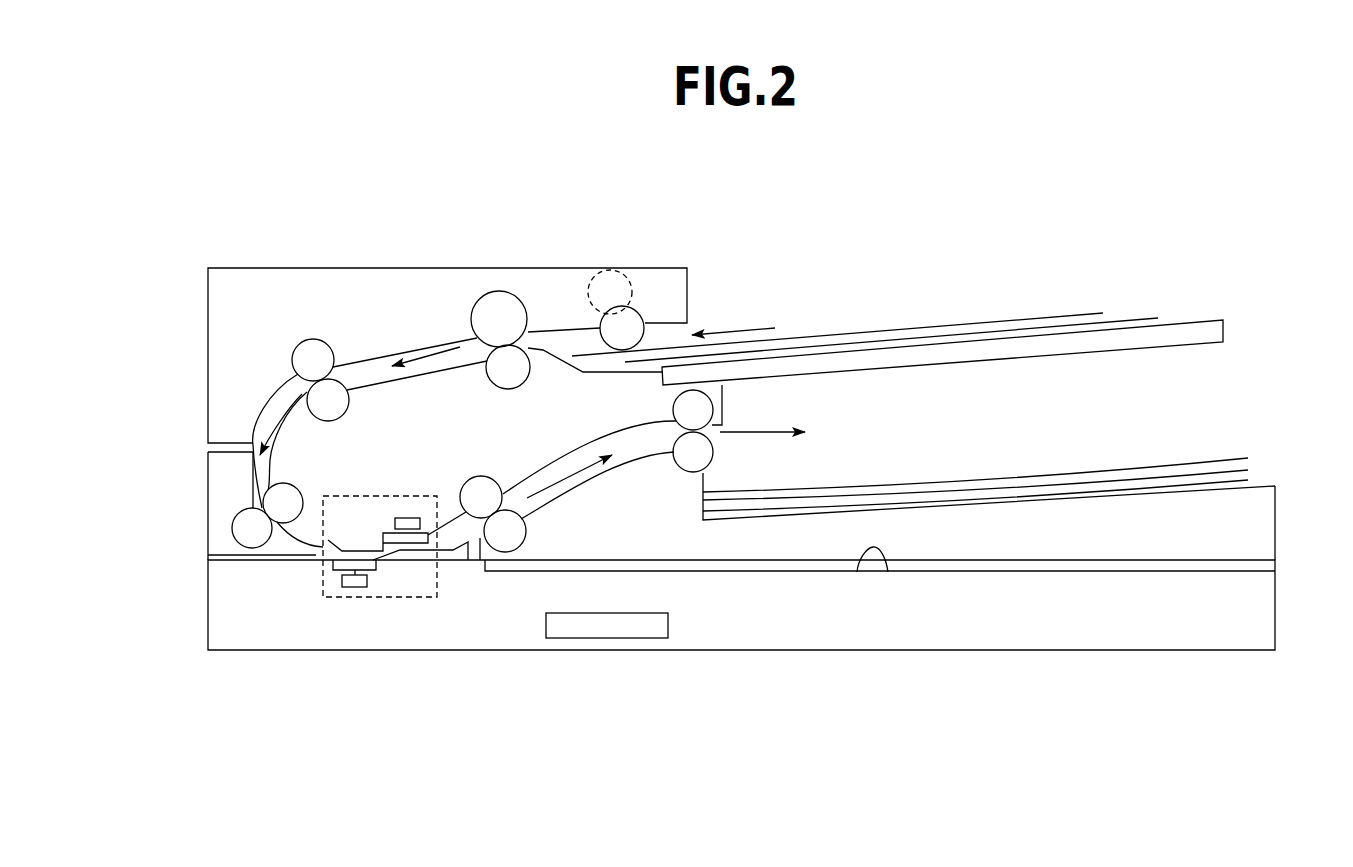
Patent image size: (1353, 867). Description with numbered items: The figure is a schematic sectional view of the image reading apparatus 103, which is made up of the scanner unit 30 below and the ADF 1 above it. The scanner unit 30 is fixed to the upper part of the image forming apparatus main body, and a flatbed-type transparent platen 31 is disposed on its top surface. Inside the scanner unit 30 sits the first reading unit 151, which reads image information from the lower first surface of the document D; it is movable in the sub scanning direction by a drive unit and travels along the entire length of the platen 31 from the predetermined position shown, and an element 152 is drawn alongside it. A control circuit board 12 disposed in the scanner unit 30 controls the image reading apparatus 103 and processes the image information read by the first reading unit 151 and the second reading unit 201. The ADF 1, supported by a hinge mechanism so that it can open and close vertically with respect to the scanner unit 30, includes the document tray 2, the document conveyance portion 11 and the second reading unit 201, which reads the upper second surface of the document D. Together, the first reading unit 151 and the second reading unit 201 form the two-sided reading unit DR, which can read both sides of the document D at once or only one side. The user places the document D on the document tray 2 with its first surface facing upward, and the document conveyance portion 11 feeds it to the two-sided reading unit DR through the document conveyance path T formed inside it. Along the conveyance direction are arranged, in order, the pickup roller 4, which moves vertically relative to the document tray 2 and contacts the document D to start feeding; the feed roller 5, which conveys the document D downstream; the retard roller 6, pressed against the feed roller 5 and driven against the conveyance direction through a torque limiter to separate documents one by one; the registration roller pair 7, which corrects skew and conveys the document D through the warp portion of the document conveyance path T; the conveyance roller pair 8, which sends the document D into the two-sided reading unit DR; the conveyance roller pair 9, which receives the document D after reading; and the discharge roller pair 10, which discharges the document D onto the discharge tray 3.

The image reading apparatus 103 is at (693, 230).
The document conveyance portion 11 is at (270, 262).
The scanner unit 30 is at (1237, 668).
The control circuit board 12 is at (604, 639).
The platen 31 is at (857, 572).
The discharge tray 3 is at (1257, 498).
The document tray 2 is at (1063, 352).
The ADF 1 is at (1253, 352).
The document D is at (878, 338).
The pickup roller 4 is at (600, 322).
The feed roller 5 is at (499, 291).
The retard roller 6 is at (512, 389).
The registration roller pair 7 is at (313, 339).
The conveyance roller pair 8 is at (232, 528).
The conveyance roller pair 9 is at (480, 476).
The discharge roller pair 10 is at (680, 468).
The document conveyance path T is at (260, 410).
The two-sided reading unit DR is at (435, 610).
The second reading unit 201 is at (410, 517).
The light source 152 is at (332, 592).
The first reading unit 151 is at (352, 592).